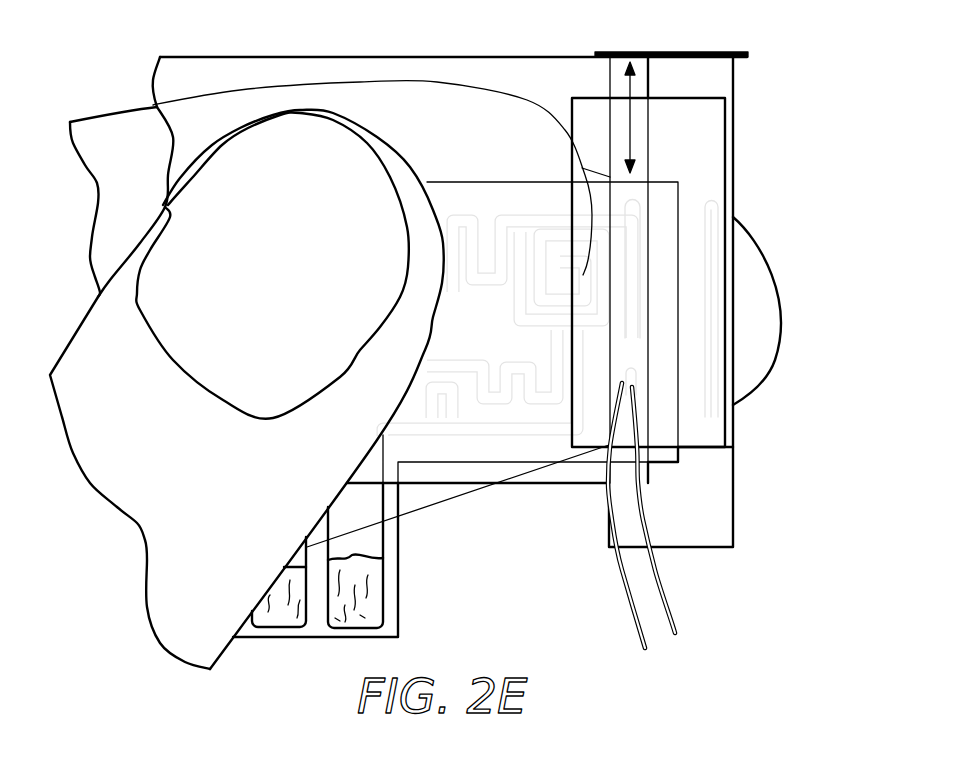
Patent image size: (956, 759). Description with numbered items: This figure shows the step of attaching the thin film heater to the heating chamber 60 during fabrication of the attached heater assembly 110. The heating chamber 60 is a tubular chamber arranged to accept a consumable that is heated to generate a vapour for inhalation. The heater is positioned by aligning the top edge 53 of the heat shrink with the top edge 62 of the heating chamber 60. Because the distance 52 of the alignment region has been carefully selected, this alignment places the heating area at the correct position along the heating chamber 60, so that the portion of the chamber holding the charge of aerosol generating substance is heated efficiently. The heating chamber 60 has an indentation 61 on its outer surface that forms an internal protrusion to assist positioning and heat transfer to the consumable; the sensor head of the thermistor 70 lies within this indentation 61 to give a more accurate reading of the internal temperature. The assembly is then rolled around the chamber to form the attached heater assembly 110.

The top edge of the heat shrink 53 is at (539, 55).
The top edge of the heating chamber 62 is at (750, 55).
The heating chamber 60 is at (749, 108).
The distance of the alignment region 52 is at (632, 131).
The indentation 61 is at (713, 255).
The thermistor 70 is at (637, 375).
The attached heater assembly 110 is at (428, 573).